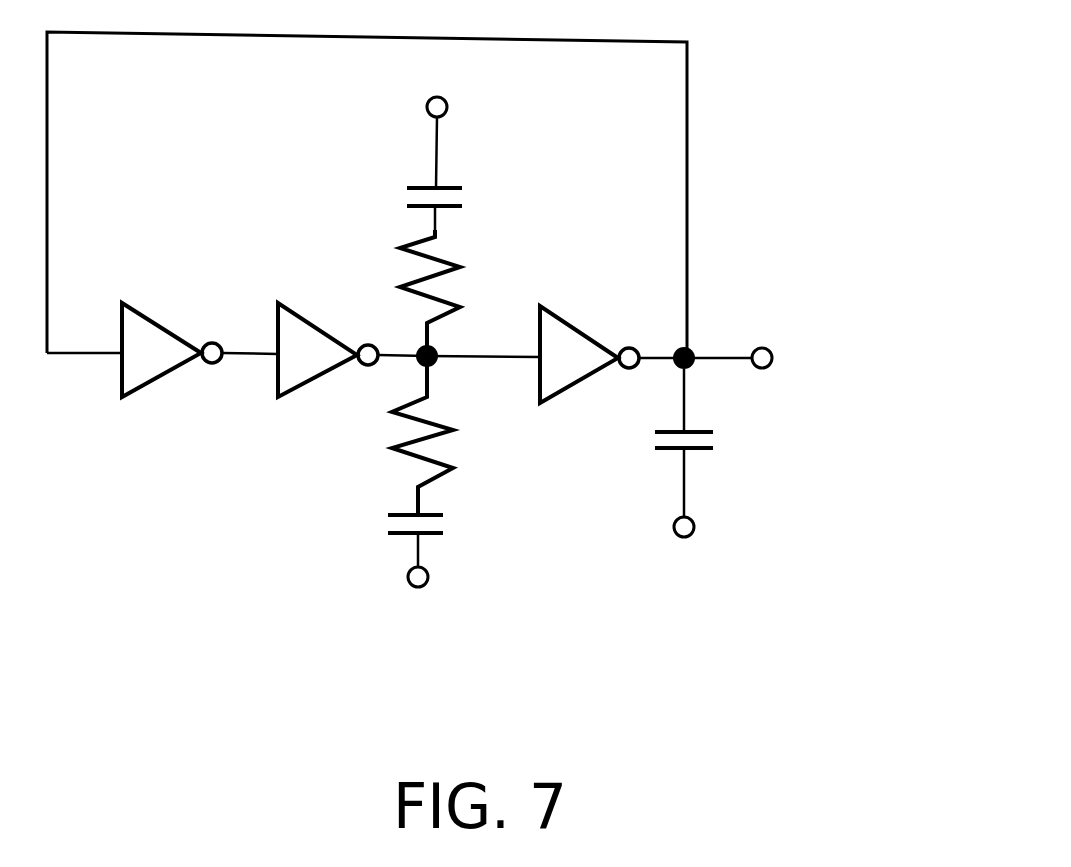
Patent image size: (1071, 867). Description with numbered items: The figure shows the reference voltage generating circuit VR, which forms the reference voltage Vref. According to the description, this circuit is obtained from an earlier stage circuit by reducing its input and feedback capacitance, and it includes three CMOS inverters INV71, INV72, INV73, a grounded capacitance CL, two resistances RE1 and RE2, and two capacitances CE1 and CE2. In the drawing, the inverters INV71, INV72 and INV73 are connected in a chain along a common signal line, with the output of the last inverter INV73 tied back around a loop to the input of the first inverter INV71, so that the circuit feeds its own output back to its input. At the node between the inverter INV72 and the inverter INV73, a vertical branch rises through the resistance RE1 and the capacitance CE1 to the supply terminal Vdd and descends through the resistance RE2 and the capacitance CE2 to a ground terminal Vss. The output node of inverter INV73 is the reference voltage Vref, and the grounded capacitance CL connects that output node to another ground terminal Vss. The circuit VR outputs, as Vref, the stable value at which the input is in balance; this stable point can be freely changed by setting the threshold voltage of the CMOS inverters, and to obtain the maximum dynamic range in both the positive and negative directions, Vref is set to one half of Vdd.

The reference voltage generating circuit VR is at (776, 118).
The CMOS inverter INV71 is at (165, 318).
The CMOS inverter INV72 is at (278, 382).
The CMOS inverter INV73 is at (566, 382).
The resistance RE1 is at (477, 288).
The resistance RE2 is at (362, 440).
The capacitance CE1 is at (457, 188).
The capacitance CE2 is at (392, 535).
The grounded capacitance CL is at (719, 443).
The supply voltage Vdd is at (495, 128).
The ground potential Vss is at (551, 584).
The reference voltage Vref is at (751, 326).